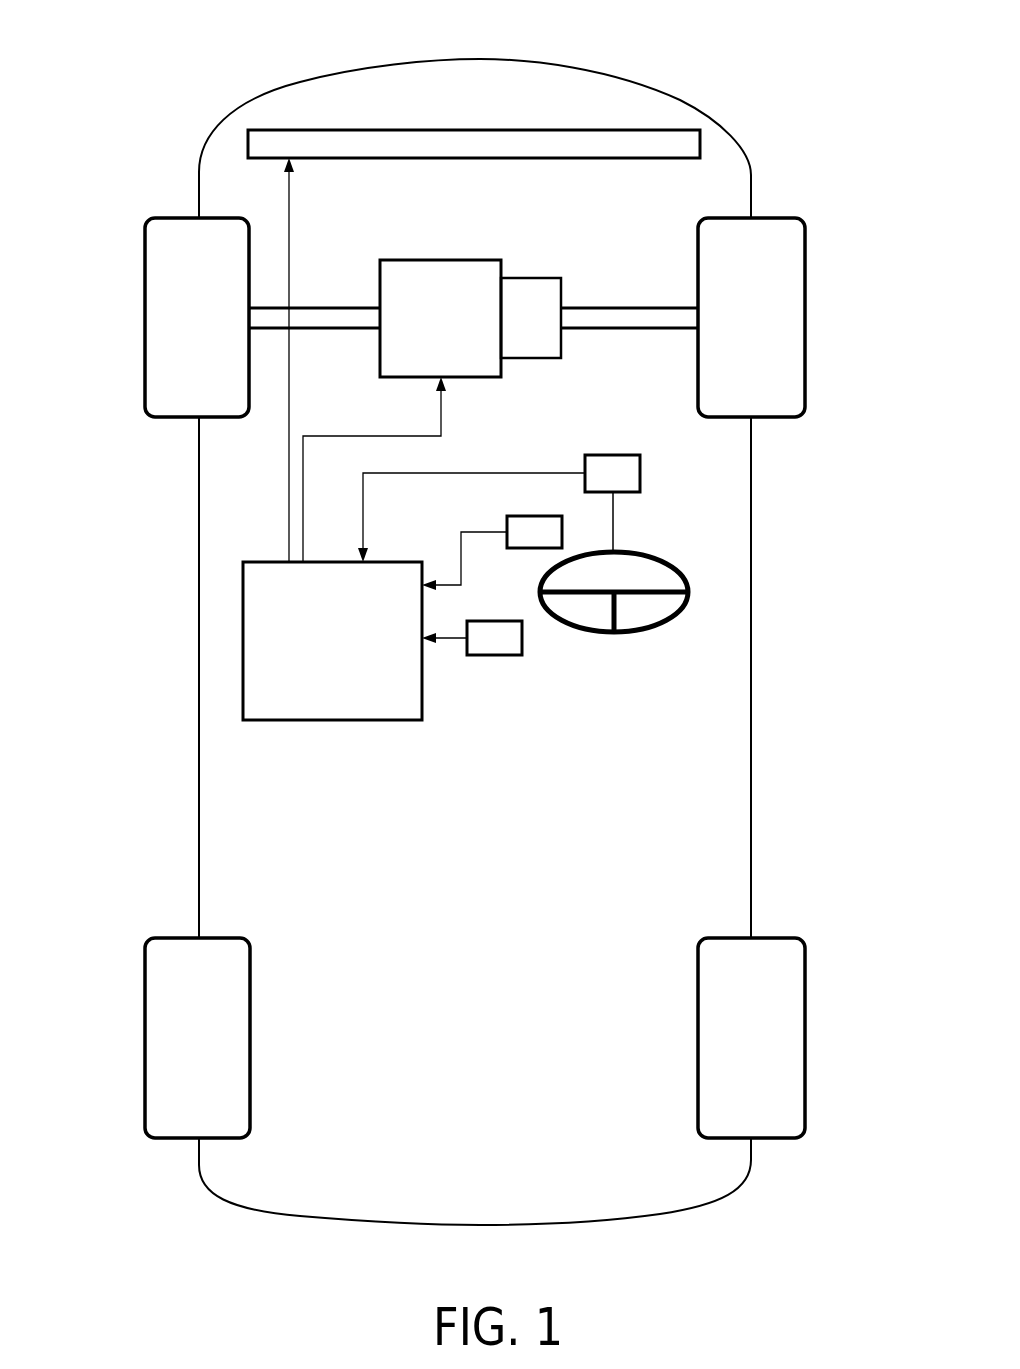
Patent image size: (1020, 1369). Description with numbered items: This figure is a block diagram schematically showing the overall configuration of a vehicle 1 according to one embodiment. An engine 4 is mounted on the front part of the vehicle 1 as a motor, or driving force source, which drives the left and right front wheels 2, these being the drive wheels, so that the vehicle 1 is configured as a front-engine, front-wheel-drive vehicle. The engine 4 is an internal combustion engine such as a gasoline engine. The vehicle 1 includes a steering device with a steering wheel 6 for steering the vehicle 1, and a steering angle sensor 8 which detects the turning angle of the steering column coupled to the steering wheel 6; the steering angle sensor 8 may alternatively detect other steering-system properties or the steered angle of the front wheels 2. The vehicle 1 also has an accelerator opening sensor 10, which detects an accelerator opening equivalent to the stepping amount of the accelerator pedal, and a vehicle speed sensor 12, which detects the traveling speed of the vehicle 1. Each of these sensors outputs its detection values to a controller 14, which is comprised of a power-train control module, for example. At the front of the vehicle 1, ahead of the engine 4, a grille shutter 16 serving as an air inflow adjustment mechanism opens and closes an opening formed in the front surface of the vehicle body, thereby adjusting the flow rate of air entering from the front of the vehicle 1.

The vehicle 1 is at (754, 85).
The front wheels 2 is at (145, 318).
The engine 4 is at (438, 258).
The steering wheel 6 is at (652, 553).
The steering angle sensor 8 is at (640, 473).
The accelerator opening sensor 10 is at (531, 516).
The vehicle speed sensor 12 is at (490, 656).
The controller 14 is at (263, 560).
The grille shutter 16 is at (345, 160).